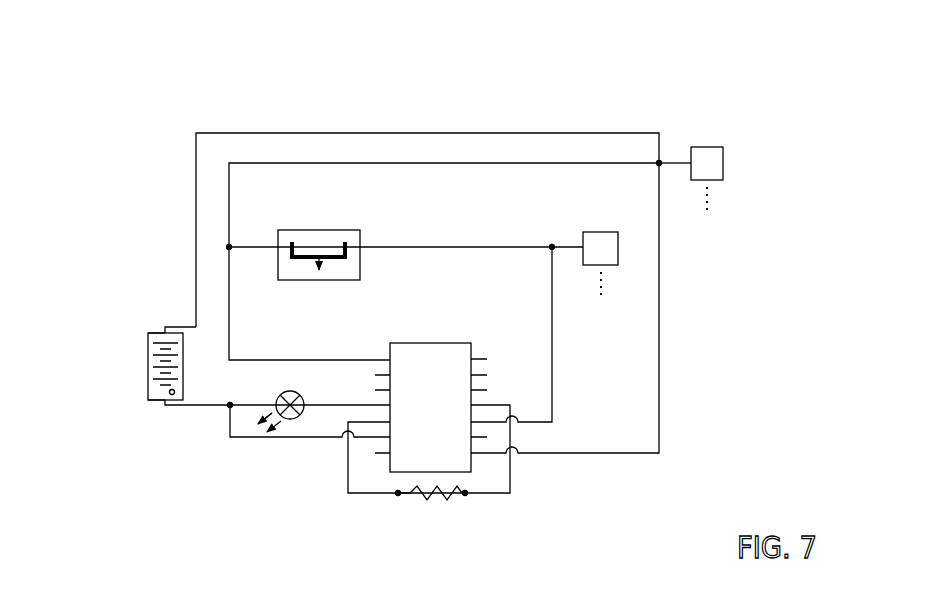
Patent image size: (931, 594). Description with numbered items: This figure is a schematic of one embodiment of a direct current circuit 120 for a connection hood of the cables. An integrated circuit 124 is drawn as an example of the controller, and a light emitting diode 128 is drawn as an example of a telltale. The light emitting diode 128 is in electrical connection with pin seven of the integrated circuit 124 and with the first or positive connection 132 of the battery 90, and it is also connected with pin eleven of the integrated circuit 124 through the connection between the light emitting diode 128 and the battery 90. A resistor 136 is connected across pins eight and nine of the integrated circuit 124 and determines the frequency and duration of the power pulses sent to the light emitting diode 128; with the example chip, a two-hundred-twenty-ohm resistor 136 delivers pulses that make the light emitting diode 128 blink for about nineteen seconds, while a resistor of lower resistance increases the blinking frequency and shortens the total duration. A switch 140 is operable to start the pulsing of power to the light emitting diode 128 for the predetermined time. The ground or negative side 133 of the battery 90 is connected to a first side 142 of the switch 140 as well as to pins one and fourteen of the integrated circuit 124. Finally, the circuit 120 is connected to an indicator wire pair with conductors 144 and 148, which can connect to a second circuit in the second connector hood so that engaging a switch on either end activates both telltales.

The direct current circuit 120 is at (222, 88).
The integrated circuit 124 is at (427, 342).
The light emitting diode 128 is at (298, 396).
The first or positive connection 132 is at (160, 400).
The ground or negative side 133 is at (160, 333).
The battery 90 is at (148, 365).
The resistor 136 is at (447, 497).
The switch 140 is at (345, 227).
The first side of switch 142 is at (292, 246).
The conductor of indicator wire pair 144 is at (705, 147).
The conductor of indicator wire pair 148 is at (597, 232).